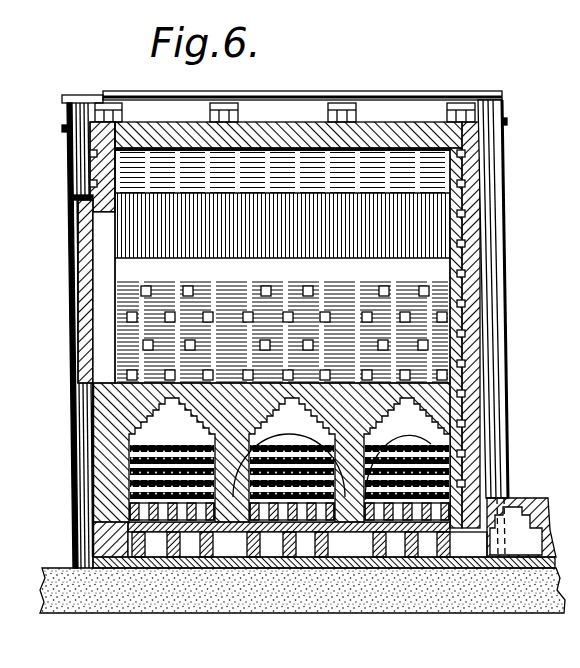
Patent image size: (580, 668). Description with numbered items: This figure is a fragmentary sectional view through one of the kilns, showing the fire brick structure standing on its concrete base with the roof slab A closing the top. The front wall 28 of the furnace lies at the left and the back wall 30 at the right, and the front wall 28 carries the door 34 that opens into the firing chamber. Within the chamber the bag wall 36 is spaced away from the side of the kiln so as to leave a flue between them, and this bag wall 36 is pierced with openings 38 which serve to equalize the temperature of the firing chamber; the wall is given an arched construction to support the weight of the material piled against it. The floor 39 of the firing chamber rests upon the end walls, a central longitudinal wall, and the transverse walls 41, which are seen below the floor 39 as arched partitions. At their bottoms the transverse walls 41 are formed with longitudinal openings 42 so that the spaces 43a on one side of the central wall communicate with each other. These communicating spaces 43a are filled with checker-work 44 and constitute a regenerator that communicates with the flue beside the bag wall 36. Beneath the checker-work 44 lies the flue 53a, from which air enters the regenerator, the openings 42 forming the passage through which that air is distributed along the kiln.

The roof slab A is at (405, 125).
The back wall 30 is at (478, 193).
The bag wall 36 is at (267, 266).
The openings 38 is at (322, 318).
The door 34 is at (90, 337).
The floor 39 is at (224, 393).
The transverse wall 41 is at (289, 460).
The checker-work 44 is at (388, 498).
The space 43a is at (403, 432).
The front wall 28 is at (110, 517).
The longitudinal opening 42 is at (232, 551).
The flue 53a is at (307, 553).